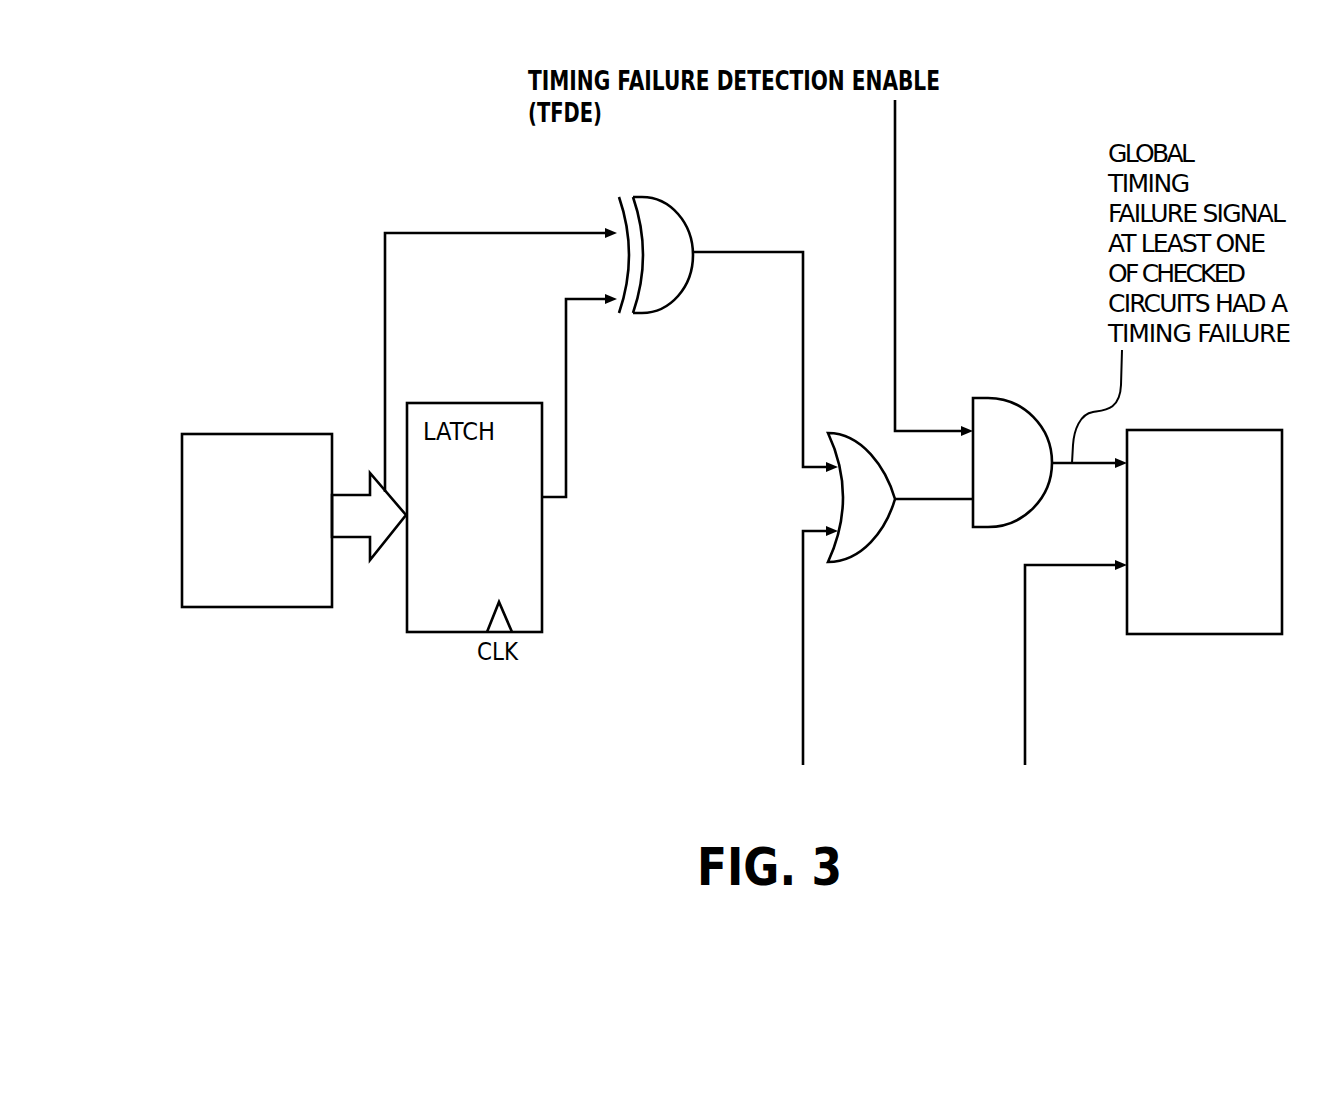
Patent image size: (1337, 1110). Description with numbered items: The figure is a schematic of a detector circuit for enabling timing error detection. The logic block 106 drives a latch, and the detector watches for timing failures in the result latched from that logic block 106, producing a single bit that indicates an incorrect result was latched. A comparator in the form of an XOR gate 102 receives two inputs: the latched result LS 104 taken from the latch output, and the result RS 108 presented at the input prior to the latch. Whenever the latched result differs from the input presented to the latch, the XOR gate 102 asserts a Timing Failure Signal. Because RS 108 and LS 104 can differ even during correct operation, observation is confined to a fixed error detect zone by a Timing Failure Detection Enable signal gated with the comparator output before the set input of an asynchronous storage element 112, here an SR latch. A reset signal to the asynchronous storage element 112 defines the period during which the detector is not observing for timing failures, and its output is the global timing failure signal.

The comparator (XOR gate) 102 is at (684, 216).
The latched result (LS) 104 is at (557, 500).
The logic block 106 is at (202, 433).
The result presented at the input prior to the latch (RS) 108 is at (372, 192).
The asynchronous storage element 112 is at (1150, 635).